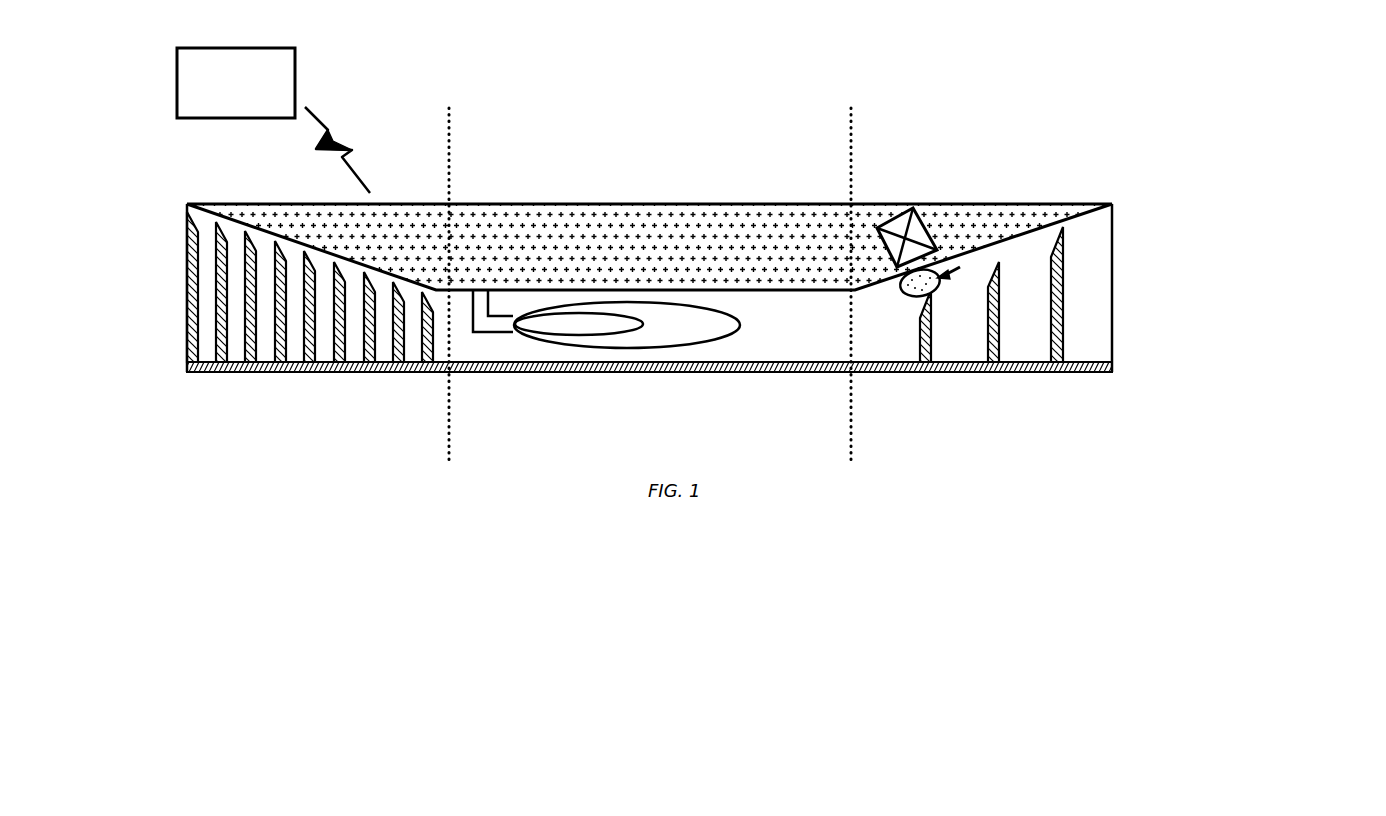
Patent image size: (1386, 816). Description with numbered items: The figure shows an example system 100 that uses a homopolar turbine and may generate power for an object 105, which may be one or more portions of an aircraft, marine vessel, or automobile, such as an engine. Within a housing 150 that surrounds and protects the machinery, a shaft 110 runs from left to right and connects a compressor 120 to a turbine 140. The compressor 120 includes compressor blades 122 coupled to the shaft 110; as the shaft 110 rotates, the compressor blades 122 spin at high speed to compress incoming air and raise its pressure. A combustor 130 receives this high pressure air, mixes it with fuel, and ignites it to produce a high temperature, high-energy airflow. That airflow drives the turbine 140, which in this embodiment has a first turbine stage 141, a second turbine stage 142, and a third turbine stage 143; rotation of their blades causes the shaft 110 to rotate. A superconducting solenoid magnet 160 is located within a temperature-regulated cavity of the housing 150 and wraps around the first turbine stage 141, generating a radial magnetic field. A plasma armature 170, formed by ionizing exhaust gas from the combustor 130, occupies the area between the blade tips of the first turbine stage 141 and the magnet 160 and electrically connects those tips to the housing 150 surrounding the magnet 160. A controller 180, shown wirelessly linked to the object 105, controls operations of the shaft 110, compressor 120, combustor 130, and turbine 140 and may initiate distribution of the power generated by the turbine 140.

The system 100 is at (527, 66).
The object 105 is at (510, 258).
The shaft 110 is at (791, 373).
The compressor 120 is at (318, 406).
The compressor blades 122 is at (250, 306).
The combustor 130 is at (606, 365).
The turbine 140 is at (981, 406).
The first turbine stage 141 is at (935, 335).
The second turbine stage 142 is at (999, 323).
The third turbine stage 143 is at (1061, 262).
The housing 150 is at (672, 202).
The magnet 160 is at (905, 200).
The plasma armature 170 is at (962, 264).
The controller 180 is at (273, 120).